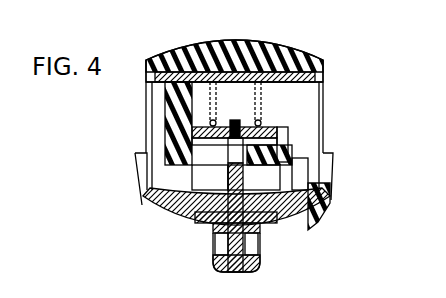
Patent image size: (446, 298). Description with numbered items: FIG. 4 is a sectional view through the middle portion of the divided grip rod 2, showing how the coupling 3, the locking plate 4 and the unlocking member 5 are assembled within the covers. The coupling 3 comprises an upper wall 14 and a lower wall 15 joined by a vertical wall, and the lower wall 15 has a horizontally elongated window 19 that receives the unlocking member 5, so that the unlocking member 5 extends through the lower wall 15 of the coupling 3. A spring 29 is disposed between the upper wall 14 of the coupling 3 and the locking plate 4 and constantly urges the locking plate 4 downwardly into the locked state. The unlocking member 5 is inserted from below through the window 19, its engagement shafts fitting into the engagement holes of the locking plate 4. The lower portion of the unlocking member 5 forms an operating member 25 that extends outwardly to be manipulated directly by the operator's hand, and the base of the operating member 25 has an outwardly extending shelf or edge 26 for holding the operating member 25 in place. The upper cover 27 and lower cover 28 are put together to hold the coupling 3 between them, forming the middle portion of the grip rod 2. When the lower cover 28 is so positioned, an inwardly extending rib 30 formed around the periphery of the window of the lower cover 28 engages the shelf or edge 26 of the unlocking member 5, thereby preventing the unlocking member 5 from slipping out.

The grip rod 2 is at (338, 64).
The coupling 3 is at (310, 168).
The locking plate 4 is at (262, 125).
The unlocking member 5 is at (263, 259).
The upper wall 14 is at (190, 73).
The lower wall 15 is at (165, 189).
The window 19 is at (216, 188).
The operating member 25 is at (218, 265).
The shelf or edge 26 is at (198, 223).
The upper cover 27 is at (277, 48).
The lower cover 28 is at (148, 203).
The spring 29 is at (261, 101).
The rib 30 is at (275, 238).